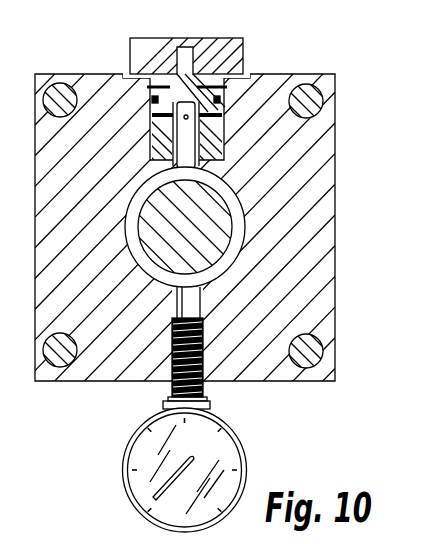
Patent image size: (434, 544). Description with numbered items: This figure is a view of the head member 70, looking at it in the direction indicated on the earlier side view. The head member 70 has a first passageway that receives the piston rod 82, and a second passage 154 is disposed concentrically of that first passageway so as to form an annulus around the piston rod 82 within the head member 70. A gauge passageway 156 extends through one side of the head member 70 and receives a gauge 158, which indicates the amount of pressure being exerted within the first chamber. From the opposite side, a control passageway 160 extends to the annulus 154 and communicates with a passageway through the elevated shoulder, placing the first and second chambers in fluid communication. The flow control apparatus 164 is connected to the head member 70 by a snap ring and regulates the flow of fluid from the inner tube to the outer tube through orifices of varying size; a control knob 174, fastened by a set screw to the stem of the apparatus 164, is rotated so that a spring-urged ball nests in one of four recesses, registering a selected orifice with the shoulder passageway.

The head member 70 is at (305, 72).
The piston rod 82 is at (217, 245).
The second passage 154 is at (237, 205).
The gauge passageway 156 is at (191, 303).
The gauge 158 is at (245, 448).
The control passageway 160 is at (191, 167).
The apparatus 164 is at (223, 36).
The control knob 174 is at (133, 53).